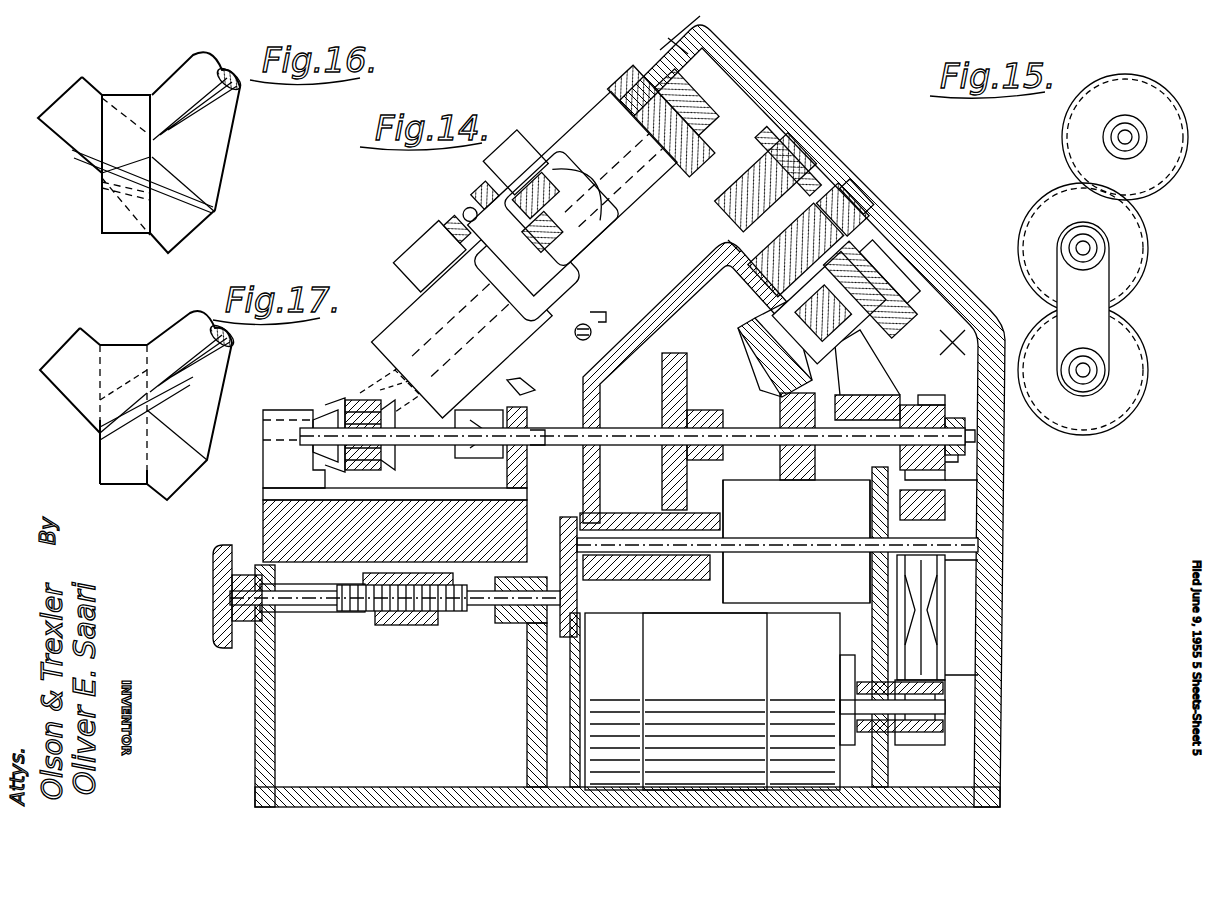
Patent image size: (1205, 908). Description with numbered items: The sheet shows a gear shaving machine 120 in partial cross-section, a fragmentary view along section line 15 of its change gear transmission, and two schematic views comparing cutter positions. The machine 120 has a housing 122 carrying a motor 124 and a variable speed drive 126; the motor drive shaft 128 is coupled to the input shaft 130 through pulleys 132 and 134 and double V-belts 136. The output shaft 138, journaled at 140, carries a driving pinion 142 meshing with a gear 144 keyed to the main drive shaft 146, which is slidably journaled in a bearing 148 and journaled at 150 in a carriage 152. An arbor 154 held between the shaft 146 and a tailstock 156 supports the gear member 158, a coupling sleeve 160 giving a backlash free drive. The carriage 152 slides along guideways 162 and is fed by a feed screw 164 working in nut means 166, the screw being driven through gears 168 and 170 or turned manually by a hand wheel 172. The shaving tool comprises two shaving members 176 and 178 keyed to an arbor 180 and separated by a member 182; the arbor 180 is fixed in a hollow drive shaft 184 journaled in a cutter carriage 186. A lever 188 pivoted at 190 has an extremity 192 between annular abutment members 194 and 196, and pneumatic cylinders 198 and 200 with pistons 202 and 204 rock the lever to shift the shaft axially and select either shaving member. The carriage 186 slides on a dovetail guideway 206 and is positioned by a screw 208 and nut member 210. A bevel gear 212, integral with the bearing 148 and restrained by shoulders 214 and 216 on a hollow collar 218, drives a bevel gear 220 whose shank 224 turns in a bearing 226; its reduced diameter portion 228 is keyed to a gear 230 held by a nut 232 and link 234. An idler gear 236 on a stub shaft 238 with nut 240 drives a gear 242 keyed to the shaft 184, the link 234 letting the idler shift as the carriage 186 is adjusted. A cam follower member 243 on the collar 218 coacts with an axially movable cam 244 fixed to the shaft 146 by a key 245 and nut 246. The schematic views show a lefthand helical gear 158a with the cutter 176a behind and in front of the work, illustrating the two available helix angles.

In FIG. 14, the section line 15 is at (801, 185).
In FIG. 14, the machine 120 is at (1025, 478).
In FIG. 14, the housing 122 is at (1005, 568).
In FIG. 14, the motor 124 is at (888, 780).
In FIG. 14, the variable speed drive 126 is at (718, 588).
In FIG. 14, the motor drive shaft 128 is at (858, 714).
In FIG. 14, the input shaft 130 is at (900, 490).
In FIG. 14, the pulley 132 is at (945, 705).
In FIG. 14, the pulley 134 is at (980, 540).
In FIG. 14, the double V-belts 136 is at (940, 622).
In FIG. 14, the output shaft 138 is at (640, 440).
In FIG. 14, the journal 140 is at (548, 440).
In FIG. 14, the driving pinion 142 is at (720, 505).
In FIG. 14, the gear 144 is at (690, 355).
In FIG. 14, the main drive shaft 146 is at (622, 428).
In FIG. 14, the bearing 148 is at (920, 398).
In FIG. 14, the journal 150 is at (528, 393).
In FIG. 14, the carriage 152 is at (262, 494).
In FIG. 14, the arbor 154 is at (430, 445).
In FIG. 14, the tailstock 156 is at (318, 402).
In FIG. 14, the gear member 158 is at (405, 368).
In FIG. 14, the coupling sleeve 160 is at (492, 460).
In FIG. 14, the guideways 162 is at (262, 540).
In FIG. 14, the feed screw 164 is at (314, 612).
In FIG. 14, the nut means 166 is at (378, 628).
In FIG. 14, the gear 168 is at (566, 516).
In FIG. 14, the gear 170 is at (586, 650).
In FIG. 14, the hand wheel 172 is at (220, 650).
In FIG. 14, the shaving member 176 is at (372, 392).
In FIG. 14, the shaving member 178 is at (330, 402).
In FIG. 14, the arbor 180 is at (395, 378).
In FIG. 14, the spacer member 182 is at (370, 462).
In FIG. 14, the hollow drive shaft 184 is at (420, 330).
In FIG. 14, the carriage 186 is at (600, 120).
In FIG. 14, the lever 188 is at (535, 205).
In FIG. 14, the pivot 190 is at (568, 210).
In FIG. 14, the lever extremity 192 is at (532, 380).
In FIG. 14, the annular abutment member 194 is at (598, 222).
In FIG. 14, the annular abutment member 196 is at (500, 265).
In FIG. 14, the pneumatic cylinder 198 is at (428, 240).
In FIG. 14, the pneumatic cylinder 200 is at (528, 145).
In FIG. 14, the piston 202 is at (468, 216).
In FIG. 14, the piston 204 is at (482, 183).
In FIG. 14, the dovetail guideway 206 is at (620, 280).
In FIG. 14, the screw 208 is at (614, 304).
In FIG. 14, the nut member 210 is at (575, 335).
In FIG. 14, the bevel gear 212 is at (782, 455).
In FIG. 14, the shoulder 214 is at (864, 375).
In FIG. 14, the shoulder 216 is at (860, 490).
In FIG. 14, the hollow collar 218 is at (952, 416).
In FIG. 14, the bevel gear 220 is at (757, 348).
In FIG. 14, the shank 224 is at (878, 300).
In FIG. 14, the bearing 226 is at (790, 300).
In FIG. 14, the reduced diameter portion 228 is at (885, 240).
In FIG. 14, the gear 230 is at (868, 330).
In FIG. 15, the gear 230 is at (1108, 412).
In FIG. 14, the nut 232 is at (860, 225).
In FIG. 14, the link 234 is at (805, 225).
In FIG. 15, the link 234 is at (1085, 283).
In FIG. 14, the idler gear 236 is at (765, 165).
In FIG. 15, the idler gear 236 is at (1120, 232).
In FIG. 14, the stub shaft 238 is at (755, 205).
In FIG. 14, the nut 240 is at (745, 150).
In FIG. 14, the gear 242 is at (700, 110).
In FIG. 15, the gear 242 is at (1142, 96).
In FIG. 14, the cam follower member 243 is at (985, 480).
In FIG. 14, the cam 244 is at (962, 452).
In FIG. 14, the key 245 is at (975, 437).
In FIG. 14, the nut 246 is at (960, 416).
In FIG. 16, the lefthand helical gear 158a is at (118, 225).
In FIG. 17, the lefthand helical gear 158a is at (105, 460).
In FIG. 16, the cutter 176a is at (190, 226).
In FIG. 17, the cutter 176a is at (180, 330).